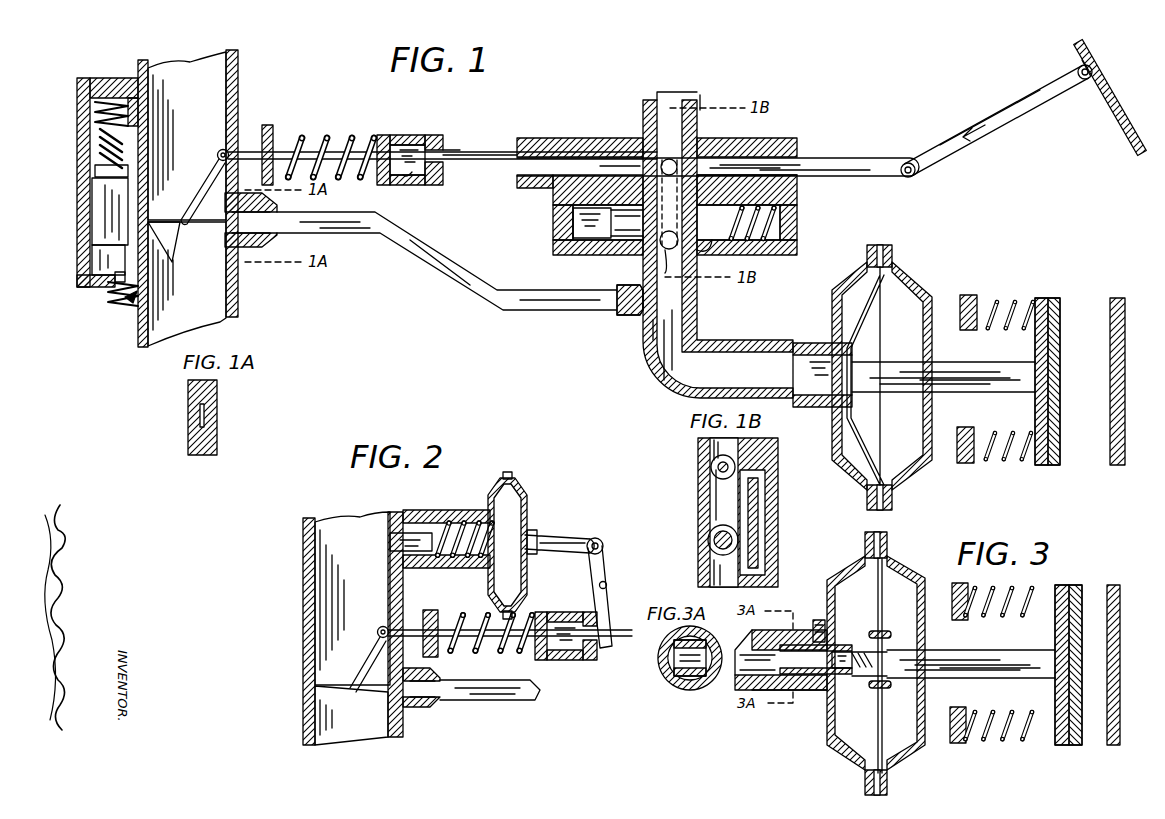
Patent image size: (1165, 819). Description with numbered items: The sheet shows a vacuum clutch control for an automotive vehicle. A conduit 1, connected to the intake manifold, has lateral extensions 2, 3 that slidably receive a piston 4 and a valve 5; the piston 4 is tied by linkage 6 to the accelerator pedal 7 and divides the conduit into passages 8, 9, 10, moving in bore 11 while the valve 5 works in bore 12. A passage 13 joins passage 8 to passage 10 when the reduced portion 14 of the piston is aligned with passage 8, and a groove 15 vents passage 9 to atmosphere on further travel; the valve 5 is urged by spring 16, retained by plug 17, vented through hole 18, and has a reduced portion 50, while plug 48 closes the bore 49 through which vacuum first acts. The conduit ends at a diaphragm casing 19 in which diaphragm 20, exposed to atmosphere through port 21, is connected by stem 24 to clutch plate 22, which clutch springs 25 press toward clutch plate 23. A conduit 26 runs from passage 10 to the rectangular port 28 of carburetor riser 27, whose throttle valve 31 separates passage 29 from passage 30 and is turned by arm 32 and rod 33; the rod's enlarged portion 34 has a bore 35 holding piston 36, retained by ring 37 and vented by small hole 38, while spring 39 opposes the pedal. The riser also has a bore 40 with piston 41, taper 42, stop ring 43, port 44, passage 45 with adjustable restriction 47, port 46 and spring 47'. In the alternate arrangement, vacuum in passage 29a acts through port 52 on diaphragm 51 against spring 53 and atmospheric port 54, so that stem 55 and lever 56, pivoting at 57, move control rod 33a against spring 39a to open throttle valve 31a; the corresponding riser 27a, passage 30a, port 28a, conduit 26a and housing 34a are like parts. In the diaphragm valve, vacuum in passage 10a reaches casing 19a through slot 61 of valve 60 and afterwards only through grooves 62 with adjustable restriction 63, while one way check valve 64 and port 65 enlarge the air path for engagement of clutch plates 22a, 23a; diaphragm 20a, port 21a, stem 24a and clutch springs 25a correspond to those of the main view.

In FIG. 1, the conduit 1 is at (690, 96).
In FIG. 1, the lateral extension 2 is at (552, 138).
In FIG. 1, the lateral extension 3 is at (786, 140).
In FIG. 1, the piston 4 is at (848, 165).
In FIG. 1, the valve 5 is at (620, 240).
In FIG. 1, the linkage 6 is at (968, 130).
In FIG. 1, the accelerator pedal 7 is at (1115, 112).
In FIG. 1, the passage 8 is at (665, 100).
In FIG. 1B, the passage 8 is at (700, 447).
In FIG. 1, the passage 9 is at (566, 193).
In FIG. 1B, the passage 9 is at (712, 502).
In FIG. 1, the passage 10 is at (664, 350).
In FIG. 1B, the passage 10 is at (700, 574).
In FIG. 1, the bore 11 is at (507, 150).
In FIG. 1, the bore 12 is at (585, 240).
In FIG. 1B, the passage 13 is at (778, 500).
In FIG. 1, the reduced portion 14 is at (680, 170).
In FIG. 1, the groove 15 is at (798, 188).
In FIG. 1, the spring 16 is at (782, 231).
In FIG. 1, the plug 17 is at (560, 238).
In FIG. 1, the hole 18 is at (560, 226).
In FIG. 1, the diaphragm casing 19 is at (925, 290).
In FIG. 1, the diaphragm 20 is at (860, 305).
In FIG. 1, the port 21 is at (934, 362).
In FIG. 1, the clutch plate 22 is at (1048, 298).
In FIG. 1, the clutch plate 23 is at (1118, 298).
In FIG. 1, the stem 24 is at (950, 385).
In FIG. 1, the clutch springs 25 is at (995, 300).
In FIG. 1, the conduit 26 is at (440, 270).
In FIG. 1, the carburetor riser 27 is at (233, 86).
In FIG. 1, the rectangular port 28 is at (250, 235).
In FIG. 1A, the rectangular port 28 is at (222, 412).
In FIG. 1, the passage 29 is at (190, 62).
In FIG. 1, the passage 30 is at (205, 316).
In FIG. 1, the carburetor throttle valve 31 is at (173, 228).
In FIG. 1, the arm 32 is at (208, 166).
In FIG. 1, the rod 33 is at (252, 148).
In FIG. 1, the enlarged portion 34 is at (383, 138).
In FIG. 1, the bore 35 is at (400, 148).
In FIG. 1, the piston 36 is at (433, 145).
In FIG. 1, the ring 37 is at (442, 178).
In FIG. 1, the small hole 38 is at (412, 172).
In FIG. 1, the spring 39 is at (304, 142).
In FIG. 1, the bore 40 is at (108, 275).
In FIG. 1, the piston 41 is at (102, 212).
In FIG. 1, the taper 42 is at (98, 178).
In FIG. 1, the ring 43 is at (100, 162).
In FIG. 1, the port 44 is at (110, 292).
In FIG. 1, the passage 45 is at (130, 300).
In FIG. 1, the port 46 is at (145, 135).
In FIG. 1, the adjustable restriction 47 is at (80, 310).
In FIG. 1, the spring 47' is at (79, 114).
In FIG. 1, the plug 48 is at (100, 82).
In FIG. 1, the bore 49 is at (712, 242).
In FIG. 1, the reduced portion 50 is at (682, 250).
In FIG. 2, the diaphragm 51 is at (510, 490).
In FIG. 2, the port 52 is at (390, 535).
In FIG. 2, the spring 53 is at (448, 522).
In FIG. 2, the port 54 is at (535, 530).
In FIG. 2, the stem 55 is at (594, 538).
In FIG. 2, the lever 56 is at (605, 560).
In FIG. 2, the pivot 57 is at (598, 584).
In FIG. 3, the valve 60 is at (805, 692).
In FIG. 3A, the slot 61 is at (732, 665).
In FIG. 3, the grooves 62 is at (800, 645).
In FIG. 3A, the grooves 62 is at (697, 640).
In FIG. 3, the adjustable restriction 63 is at (818, 620).
In FIG. 3, the one way check valve 64 is at (845, 652).
In FIG. 3, the port 65 is at (845, 676).
In FIG. 3, the passage 10a is at (762, 672).
In FIG. 3, the diaphragm casing 19a is at (900, 560).
In FIG. 3, the diaphragm 20a is at (845, 578).
In FIG. 3, the hub 21a is at (925, 649).
In FIG. 3, the clutch plate 22a is at (1068, 745).
In FIG. 3, the clutch plate 23a is at (1113, 745).
In FIG. 3, the shaft 24a is at (945, 668).
In FIG. 3, the spring 25a is at (1030, 592).
In FIG. 2, the pipe 26a is at (515, 700).
In FIG. 2, the plate 27a is at (305, 518).
In FIG. 2, the nut 28a is at (415, 700).
In FIG. 2, the passage 29a is at (340, 530).
In FIG. 2, the body 30a is at (345, 748).
In FIG. 2, the throttle valve 31a is at (378, 705).
In FIG. 2, the throttle valve control rod 33a is at (400, 632).
In FIG. 2, the housing 34a is at (580, 662).
In FIG. 2, the spring 39a is at (490, 650).